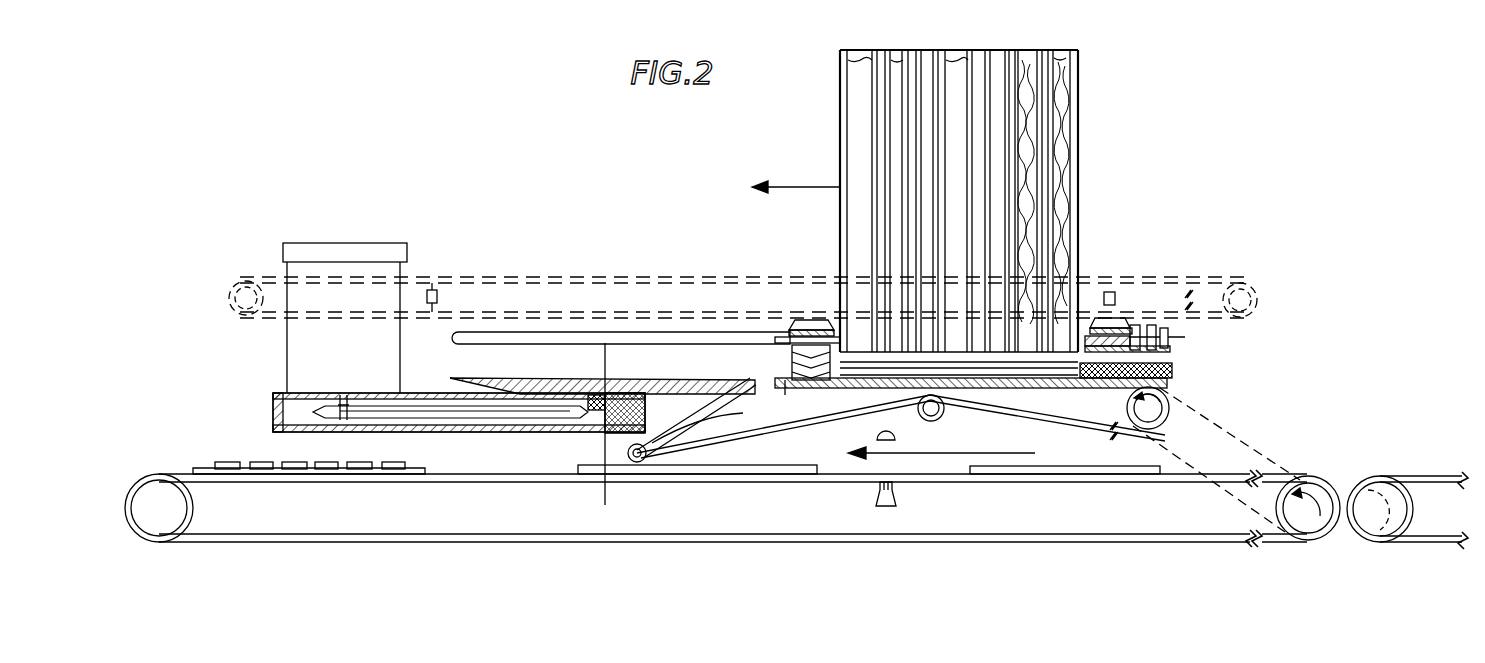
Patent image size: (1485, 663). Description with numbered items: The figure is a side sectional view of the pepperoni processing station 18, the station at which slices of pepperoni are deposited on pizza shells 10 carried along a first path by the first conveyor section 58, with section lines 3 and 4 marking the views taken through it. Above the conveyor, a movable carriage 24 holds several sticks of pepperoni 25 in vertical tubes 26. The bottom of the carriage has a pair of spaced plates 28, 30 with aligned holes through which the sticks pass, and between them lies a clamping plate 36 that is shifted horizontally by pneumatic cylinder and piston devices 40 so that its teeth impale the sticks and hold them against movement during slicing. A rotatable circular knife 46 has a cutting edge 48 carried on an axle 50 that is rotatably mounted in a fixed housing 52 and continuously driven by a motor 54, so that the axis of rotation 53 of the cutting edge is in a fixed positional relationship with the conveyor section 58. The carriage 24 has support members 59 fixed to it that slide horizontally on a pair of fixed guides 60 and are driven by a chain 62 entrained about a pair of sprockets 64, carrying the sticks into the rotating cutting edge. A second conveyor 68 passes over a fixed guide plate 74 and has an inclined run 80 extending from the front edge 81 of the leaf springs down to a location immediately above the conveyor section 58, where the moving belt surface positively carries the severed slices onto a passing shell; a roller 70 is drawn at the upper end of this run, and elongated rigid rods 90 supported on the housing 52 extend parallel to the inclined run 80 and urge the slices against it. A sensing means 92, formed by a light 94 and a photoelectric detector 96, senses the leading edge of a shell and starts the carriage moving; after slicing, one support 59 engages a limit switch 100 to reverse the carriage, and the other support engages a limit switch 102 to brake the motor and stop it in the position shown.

The section line 3- 3 is at (218, 33).
The section line 4- 4 is at (660, 495).
The pizza shell 10 is at (432, 467).
The pepperoni processing station 18 is at (1168, 130).
The movable carriage 24 is at (1088, 264).
The stick of pepperoni 25 is at (908, 134).
The vertical tube 26 is at (914, 48).
The spaced plate 28 is at (1172, 343).
The spaced plate 30 is at (1123, 392).
The clamping plate 36 is at (1166, 368).
The pneumatic cylinder and piston device 40 is at (1185, 298).
The rotatable circular knife 46 is at (645, 380).
The cutting edge 48 is at (752, 378).
The axle 50 is at (610, 431).
The fixed housing 52 is at (412, 393).
The axis of rotation 53 is at (612, 500).
The motor 54 is at (344, 244).
The first conveyor section 58 is at (1315, 480).
The support member 59 is at (796, 316).
The fixed guide 60 is at (600, 340).
The chain 62 is at (270, 280).
The sprocket 64 is at (228, 298).
The second conveyor 68 is at (995, 406).
The roller 70 is at (1172, 402).
The fixed guide plate 74 is at (788, 376).
The inclined run 80 is at (735, 413).
The front edge 81 is at (786, 382).
The elongated rod 90 is at (624, 456).
The sensing means 92 is at (912, 448).
The light 94 is at (898, 502).
The photoelectric detector 96 is at (871, 436).
The limit switch 100 is at (432, 283).
The limit switch 102 is at (1114, 292).